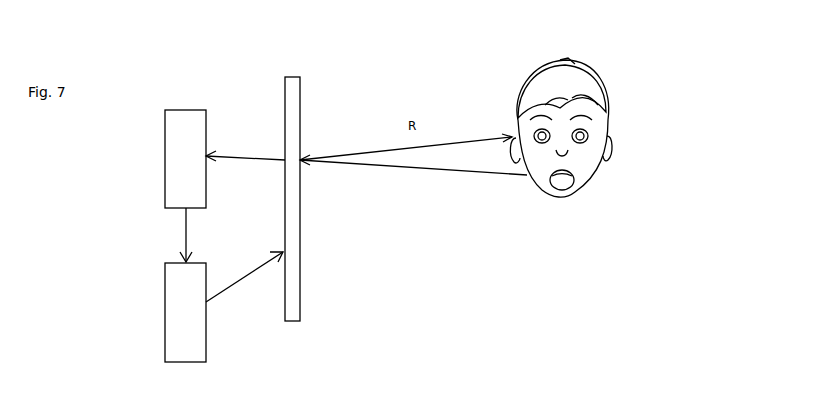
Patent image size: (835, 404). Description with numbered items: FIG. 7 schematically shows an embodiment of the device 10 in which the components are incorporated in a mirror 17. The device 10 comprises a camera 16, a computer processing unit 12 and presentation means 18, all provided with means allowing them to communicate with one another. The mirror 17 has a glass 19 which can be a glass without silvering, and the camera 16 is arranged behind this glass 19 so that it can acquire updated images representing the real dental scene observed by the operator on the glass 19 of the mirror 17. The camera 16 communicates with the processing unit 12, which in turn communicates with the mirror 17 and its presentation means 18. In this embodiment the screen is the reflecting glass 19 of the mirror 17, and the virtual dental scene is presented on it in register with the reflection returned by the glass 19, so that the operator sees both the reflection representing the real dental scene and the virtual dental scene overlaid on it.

The device 10 is at (376, 78).
The computer processing unit 12 is at (180, 340).
The camera 16 is at (168, 158).
The mirror 17 is at (300, 95).
The presentation means 18 is at (295, 307).
The glass 19 is at (299, 263).